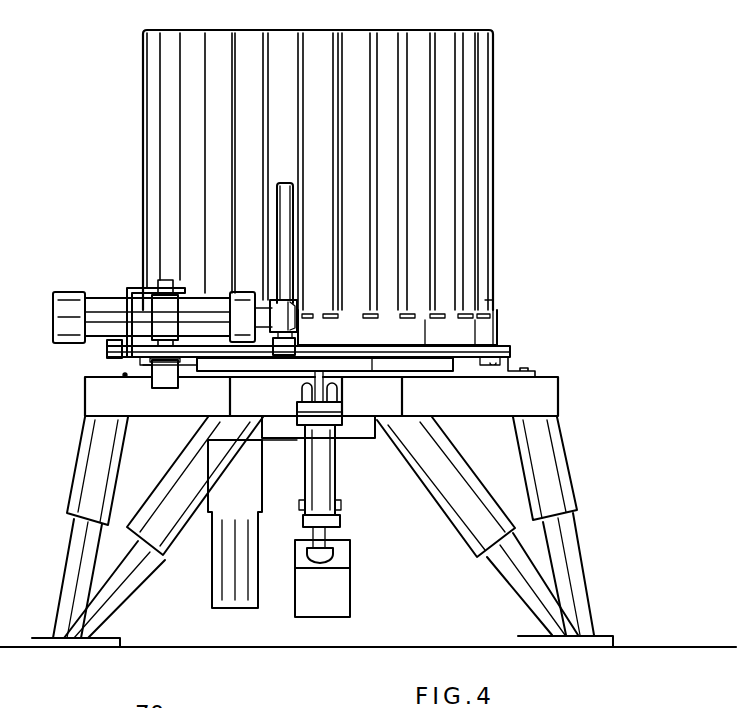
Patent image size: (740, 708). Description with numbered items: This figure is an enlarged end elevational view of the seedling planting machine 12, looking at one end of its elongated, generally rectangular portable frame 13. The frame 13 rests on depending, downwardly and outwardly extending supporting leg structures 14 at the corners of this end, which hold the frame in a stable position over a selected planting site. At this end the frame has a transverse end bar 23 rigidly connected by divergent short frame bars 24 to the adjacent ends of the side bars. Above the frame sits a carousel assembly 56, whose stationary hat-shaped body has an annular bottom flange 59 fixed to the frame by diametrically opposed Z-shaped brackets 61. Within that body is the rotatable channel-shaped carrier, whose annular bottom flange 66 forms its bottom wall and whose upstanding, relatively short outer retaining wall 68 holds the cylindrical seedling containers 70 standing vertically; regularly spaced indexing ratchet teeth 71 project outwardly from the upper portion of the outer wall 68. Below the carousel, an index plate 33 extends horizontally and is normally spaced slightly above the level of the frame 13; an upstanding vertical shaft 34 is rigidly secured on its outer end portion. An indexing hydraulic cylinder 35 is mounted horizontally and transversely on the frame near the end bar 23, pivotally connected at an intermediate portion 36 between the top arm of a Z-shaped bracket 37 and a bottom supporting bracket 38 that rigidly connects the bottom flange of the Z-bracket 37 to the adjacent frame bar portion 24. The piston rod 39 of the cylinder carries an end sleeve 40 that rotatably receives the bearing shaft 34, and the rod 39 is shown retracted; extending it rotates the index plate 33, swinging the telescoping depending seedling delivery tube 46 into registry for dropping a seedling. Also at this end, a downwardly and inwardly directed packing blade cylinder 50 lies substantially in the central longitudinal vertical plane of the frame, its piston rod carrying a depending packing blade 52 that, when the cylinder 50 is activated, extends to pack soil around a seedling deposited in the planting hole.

The seedling planting machine 12 is at (626, 118).
The frame 13 is at (558, 377).
The supporting leg structures 14 is at (67, 508).
The transverse end bar 23 is at (382, 427).
The short frame bar 24 is at (97, 400).
The index plate 33 is at (423, 365).
The vertical shaft 34 is at (288, 213).
The indexing hydraulic cylinder 35 is at (102, 310).
The pivotal connection 36 is at (167, 280).
The Z-shaped bracket 37 is at (128, 290).
The bottom supporting bracket 38 is at (140, 358).
The piston rod 39 is at (268, 308).
The end sleeve 40 is at (302, 303).
The seedling delivery tube 46 is at (217, 500).
The packing blade cylinder 50 is at (317, 460).
The packing blade 52 is at (350, 590).
The carousel assembly 56 is at (503, 106).
The annular bottom flange 59 is at (510, 352).
The Z-shaped brackets 61 is at (512, 368).
The annular bottom flange 66 is at (333, 352).
The outer retaining wall 68 is at (492, 335).
The seedling containers 70 is at (473, 222).
The indexing ratchet teeth 71 is at (495, 293).